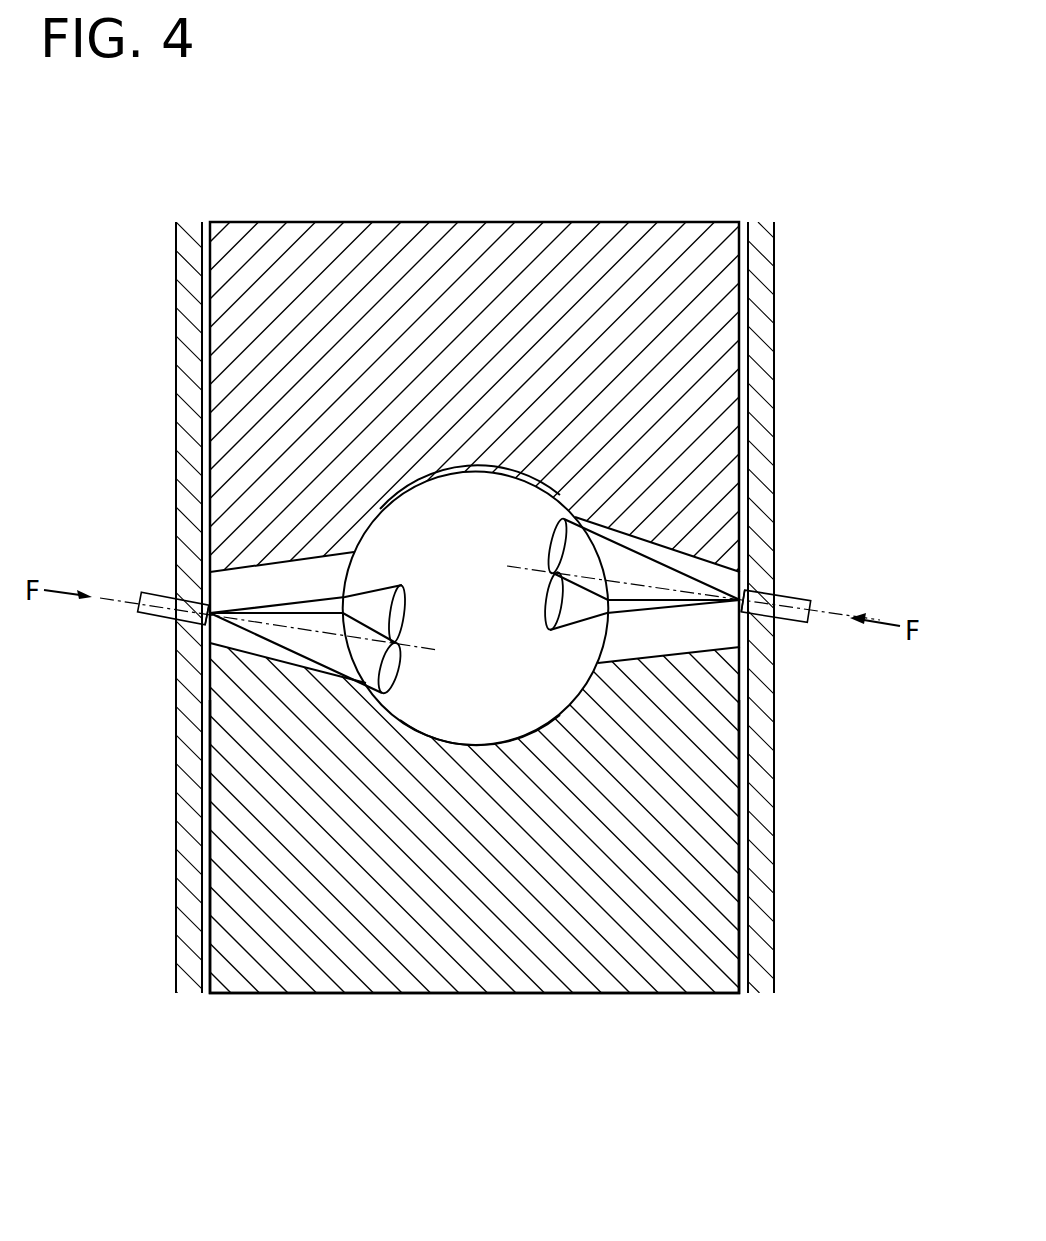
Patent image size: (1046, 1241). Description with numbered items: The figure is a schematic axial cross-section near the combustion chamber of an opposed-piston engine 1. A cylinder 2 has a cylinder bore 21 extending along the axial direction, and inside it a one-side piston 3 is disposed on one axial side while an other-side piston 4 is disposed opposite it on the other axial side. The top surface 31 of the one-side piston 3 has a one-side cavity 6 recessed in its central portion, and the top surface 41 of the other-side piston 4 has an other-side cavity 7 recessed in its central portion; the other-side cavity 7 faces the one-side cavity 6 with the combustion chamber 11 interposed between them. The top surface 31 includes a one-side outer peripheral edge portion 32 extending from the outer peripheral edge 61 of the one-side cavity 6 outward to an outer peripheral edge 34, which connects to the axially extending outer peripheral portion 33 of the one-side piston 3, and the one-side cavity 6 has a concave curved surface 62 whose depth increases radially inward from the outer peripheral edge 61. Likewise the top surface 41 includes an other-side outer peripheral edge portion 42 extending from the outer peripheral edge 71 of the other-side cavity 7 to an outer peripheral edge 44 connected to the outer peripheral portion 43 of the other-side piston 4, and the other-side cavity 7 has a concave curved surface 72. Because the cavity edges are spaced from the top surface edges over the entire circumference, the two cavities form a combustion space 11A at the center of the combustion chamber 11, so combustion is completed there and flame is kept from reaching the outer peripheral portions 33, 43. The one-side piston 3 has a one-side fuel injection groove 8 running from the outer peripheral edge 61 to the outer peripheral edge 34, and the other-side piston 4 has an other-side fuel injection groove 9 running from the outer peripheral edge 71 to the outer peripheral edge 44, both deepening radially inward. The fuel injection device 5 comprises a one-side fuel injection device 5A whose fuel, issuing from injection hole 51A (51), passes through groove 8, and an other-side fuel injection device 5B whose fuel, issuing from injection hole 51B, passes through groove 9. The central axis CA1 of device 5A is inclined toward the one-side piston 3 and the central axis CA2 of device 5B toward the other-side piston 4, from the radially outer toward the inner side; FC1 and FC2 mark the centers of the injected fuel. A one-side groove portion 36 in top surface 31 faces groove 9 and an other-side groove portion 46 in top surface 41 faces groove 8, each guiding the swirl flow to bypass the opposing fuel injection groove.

The opposed-piston engine 1 is at (288, 88).
The cylinder 2 is at (176, 288).
The cylinder bore 21 is at (202, 344).
The one-side piston 3 is at (416, 222).
The top surface of one-side piston 31 is at (248, 590).
The one-side outer peripheral edge portion 32 is at (232, 578).
The outer peripheral portion of one-side piston 33 is at (740, 278).
The outer peripheral edge of one-side top surface 34 is at (715, 552).
The one-side groove portion 36 is at (282, 560).
The other-side piston 4 is at (405, 993).
The top surface of other-side piston 41 is at (657, 663).
The other-side outer peripheral edge portion 42 is at (707, 577).
The outer peripheral portion of other-side piston 43 is at (748, 847).
The outer peripheral edge of other-side top surface 44 is at (212, 638).
The other-side groove portion 46 is at (617, 613).
The fuel injection device 5 is at (456, 600).
The one-side fuel injection device 5A is at (800, 594).
The other-side fuel injection device 5B is at (157, 587).
The injection hole 51 is at (478, 570).
The injection hole of one-side fuel injection device 51A is at (732, 587).
The injection hole of other-side fuel injection device 51B is at (153, 586).
The one-side cavity 6 is at (407, 497).
The outer peripheral edge of one-side cavity 61 is at (575, 517).
The concave curved surface of one-side cavity 62 is at (440, 478).
The other-side cavity 7 is at (568, 700).
The outer peripheral edge of other-side cavity 71 is at (385, 695).
The concave curved surface of other-side cavity 72 is at (515, 737).
The one-side fuel injection groove 8 is at (668, 548).
The other-side fuel injection groove 9 is at (273, 670).
The combustion chamber 11 is at (463, 576).
The combustion space 11A is at (476, 608).
The central axis of one-side fuel injection device CA1 is at (787, 623).
The central axis of other-side fuel injection device CA2 is at (157, 617).
The center of fuel injected from one-side fuel injection device FC1 is at (523, 575).
The center of fuel injected from other-side fuel injection device FC2 is at (422, 643).